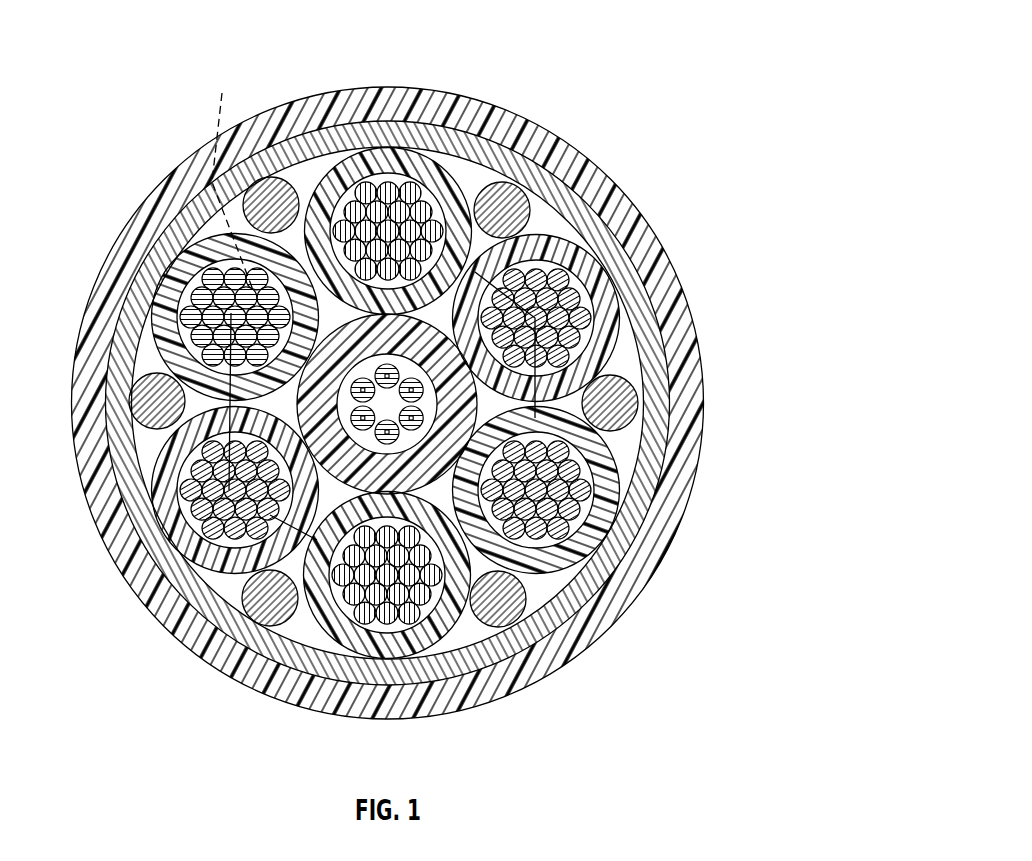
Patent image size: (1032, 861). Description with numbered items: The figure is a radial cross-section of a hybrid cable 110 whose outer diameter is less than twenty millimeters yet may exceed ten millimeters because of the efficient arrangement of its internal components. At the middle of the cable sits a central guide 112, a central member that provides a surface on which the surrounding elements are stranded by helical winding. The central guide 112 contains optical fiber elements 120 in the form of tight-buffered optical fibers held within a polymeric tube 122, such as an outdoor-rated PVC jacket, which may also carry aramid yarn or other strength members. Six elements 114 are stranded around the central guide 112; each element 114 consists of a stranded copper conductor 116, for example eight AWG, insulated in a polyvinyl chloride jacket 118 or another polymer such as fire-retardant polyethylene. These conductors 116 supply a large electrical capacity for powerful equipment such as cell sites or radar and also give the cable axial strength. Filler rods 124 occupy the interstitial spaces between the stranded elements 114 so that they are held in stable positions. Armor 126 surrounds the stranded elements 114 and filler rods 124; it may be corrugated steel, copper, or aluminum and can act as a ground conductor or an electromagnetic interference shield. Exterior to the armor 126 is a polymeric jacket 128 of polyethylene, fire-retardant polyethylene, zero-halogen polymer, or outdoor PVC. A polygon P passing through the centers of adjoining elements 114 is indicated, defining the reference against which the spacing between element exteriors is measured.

The hybrid cable 110 is at (648, 88).
The central guide 112 is at (478, 403).
The elements 114 is at (462, 160).
The stranded copper conductors 116 is at (290, 675).
The polyvinyl chloride jackets 118 is at (257, 690).
The optical fiber elements 120 is at (440, 643).
The polymeric tube 122 is at (317, 600).
The filler rods 124 is at (255, 597).
The armor 126 is at (612, 578).
The polymeric jacket 128 is at (552, 657).
The polygon P is at (232, 180).